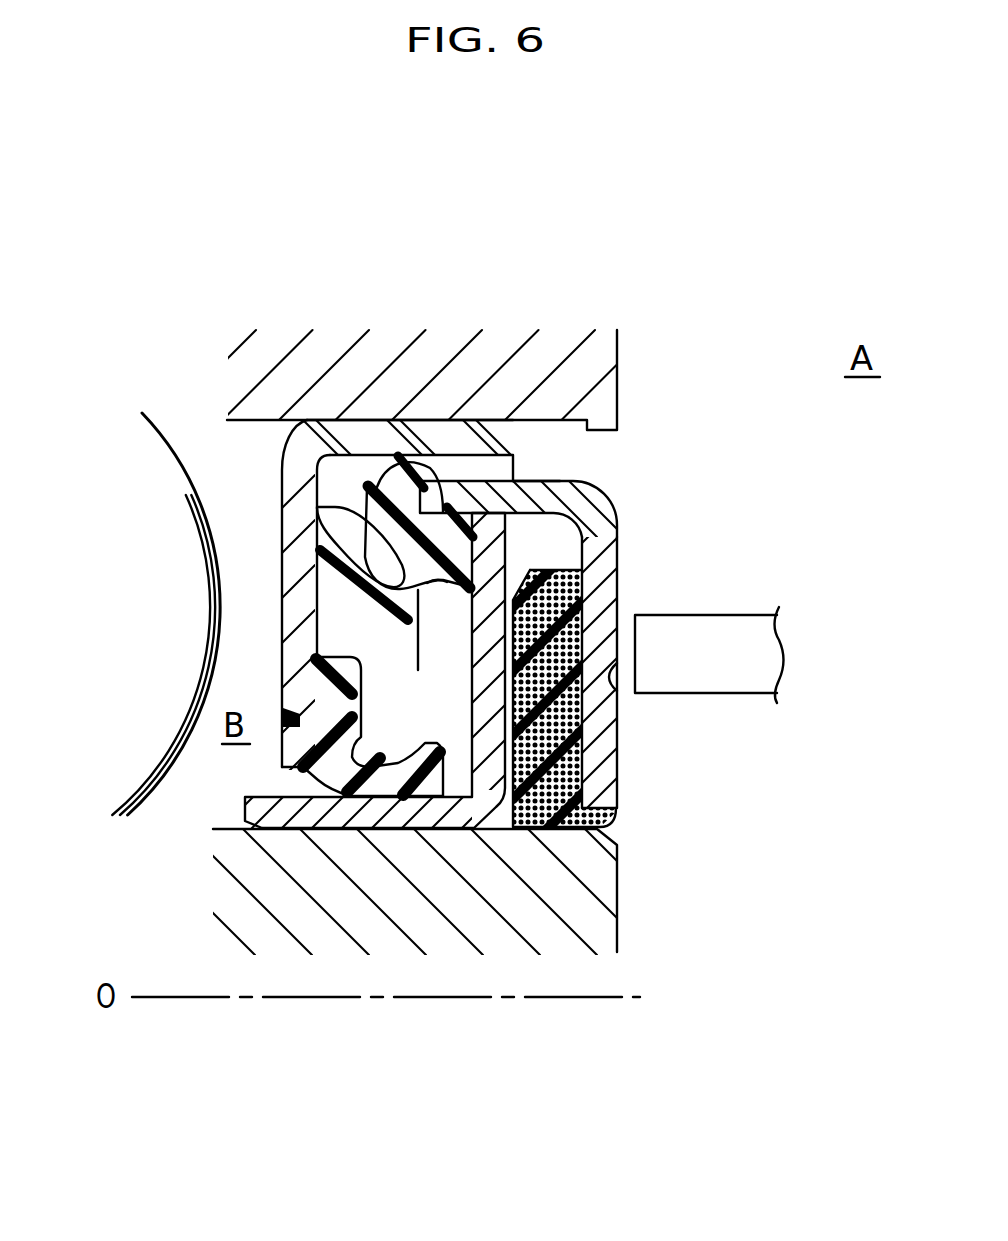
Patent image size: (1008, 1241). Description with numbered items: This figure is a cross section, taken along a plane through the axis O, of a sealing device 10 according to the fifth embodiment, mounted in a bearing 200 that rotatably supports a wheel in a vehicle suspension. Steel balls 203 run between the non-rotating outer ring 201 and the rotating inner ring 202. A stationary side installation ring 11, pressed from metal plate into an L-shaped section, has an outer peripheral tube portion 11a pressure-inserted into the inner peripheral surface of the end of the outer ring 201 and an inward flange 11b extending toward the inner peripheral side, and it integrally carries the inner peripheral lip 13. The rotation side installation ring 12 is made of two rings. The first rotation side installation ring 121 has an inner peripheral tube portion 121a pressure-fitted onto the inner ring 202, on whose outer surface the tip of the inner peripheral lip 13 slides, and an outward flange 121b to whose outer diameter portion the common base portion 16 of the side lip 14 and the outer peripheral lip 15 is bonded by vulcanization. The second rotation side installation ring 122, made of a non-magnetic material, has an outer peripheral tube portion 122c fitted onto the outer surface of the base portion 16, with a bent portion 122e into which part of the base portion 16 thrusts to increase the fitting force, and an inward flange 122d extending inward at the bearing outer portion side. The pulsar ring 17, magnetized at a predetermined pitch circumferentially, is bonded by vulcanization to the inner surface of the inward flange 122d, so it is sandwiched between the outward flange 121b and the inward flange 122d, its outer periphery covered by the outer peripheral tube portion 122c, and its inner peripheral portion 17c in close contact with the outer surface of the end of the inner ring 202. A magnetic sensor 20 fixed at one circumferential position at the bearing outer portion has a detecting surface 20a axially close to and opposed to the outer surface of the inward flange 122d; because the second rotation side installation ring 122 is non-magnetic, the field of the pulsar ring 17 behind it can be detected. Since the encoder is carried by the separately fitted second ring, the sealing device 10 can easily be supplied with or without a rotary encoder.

The sealing device 10 is at (252, 468).
The stationary side installation ring 11 is at (289, 660).
The outer peripheral tube portion 11a is at (492, 453).
The inward flange 11b is at (292, 618).
The rotation side installation ring 12 is at (601, 475).
The inner peripheral lip 13 is at (395, 800).
The side lip 14 is at (327, 530).
The outer peripheral lip 15 is at (370, 485).
The base portion 16 is at (438, 586).
The pulsar ring 17 is at (631, 715).
The inner peripheral portion 17c is at (598, 850).
The magnetic sensor 20 is at (746, 673).
The detecting surface 20a is at (618, 690).
The first rotation side installation ring 121 is at (497, 803).
The inner peripheral tube portion 121a is at (338, 820).
The outward flange 121b is at (582, 580).
The second rotation side installation ring 122 is at (550, 537).
The outer peripheral tube portion 122c is at (533, 481).
The inward flange 122d is at (603, 748).
The bent portion 122e is at (460, 479).
The bearing 200 is at (395, 306).
The outer ring 201 is at (283, 355).
The inner ring 202 is at (445, 930).
The steel balls 203 is at (147, 783).